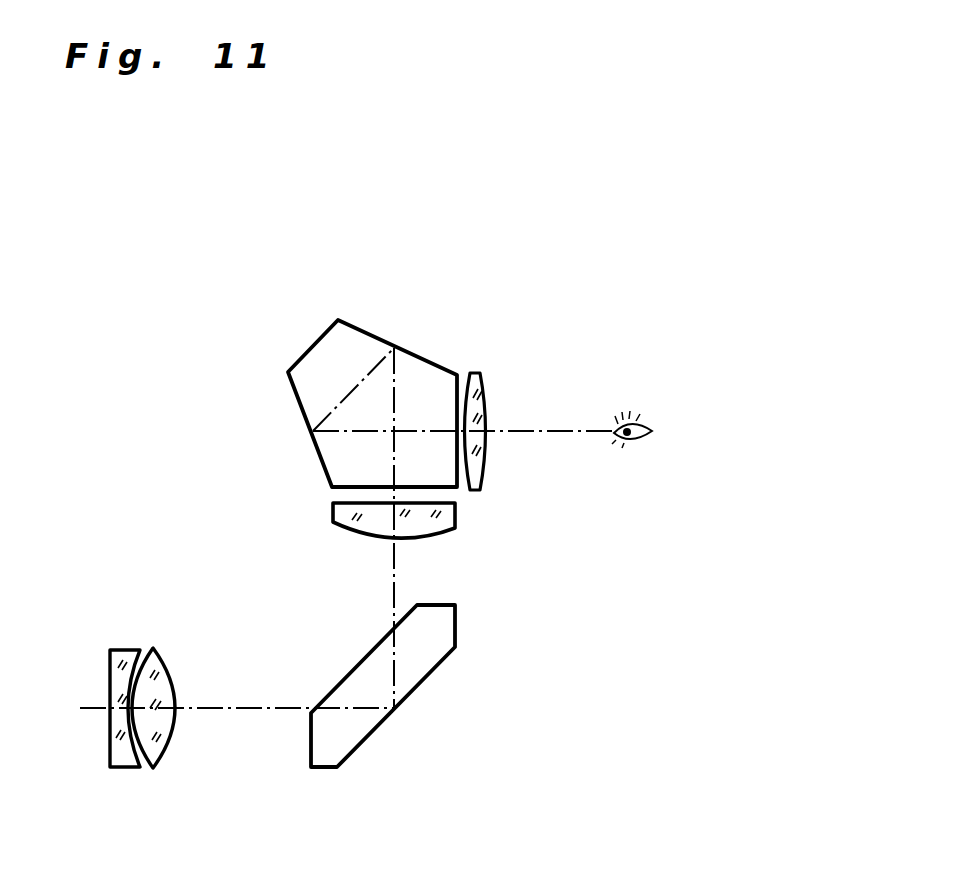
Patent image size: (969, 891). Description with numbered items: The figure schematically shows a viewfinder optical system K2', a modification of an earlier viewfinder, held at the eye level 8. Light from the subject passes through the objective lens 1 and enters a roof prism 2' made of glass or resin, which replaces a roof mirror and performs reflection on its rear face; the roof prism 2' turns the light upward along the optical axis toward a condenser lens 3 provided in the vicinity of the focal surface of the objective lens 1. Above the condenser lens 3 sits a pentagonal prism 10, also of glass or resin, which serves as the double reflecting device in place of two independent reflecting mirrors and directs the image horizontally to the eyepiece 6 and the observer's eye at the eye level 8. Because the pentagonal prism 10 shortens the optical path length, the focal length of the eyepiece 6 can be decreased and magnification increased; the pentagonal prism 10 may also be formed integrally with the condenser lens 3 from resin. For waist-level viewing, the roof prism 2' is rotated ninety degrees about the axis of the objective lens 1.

The objective lens 1 is at (172, 780).
The roof prism 2' is at (457, 686).
The condenser lens 3 is at (442, 513).
The eyepiece 6 is at (470, 373).
The eye level 8 is at (628, 410).
The pentagonal prism 10 is at (417, 375).
The viewfinder optical system K2' is at (495, 447).